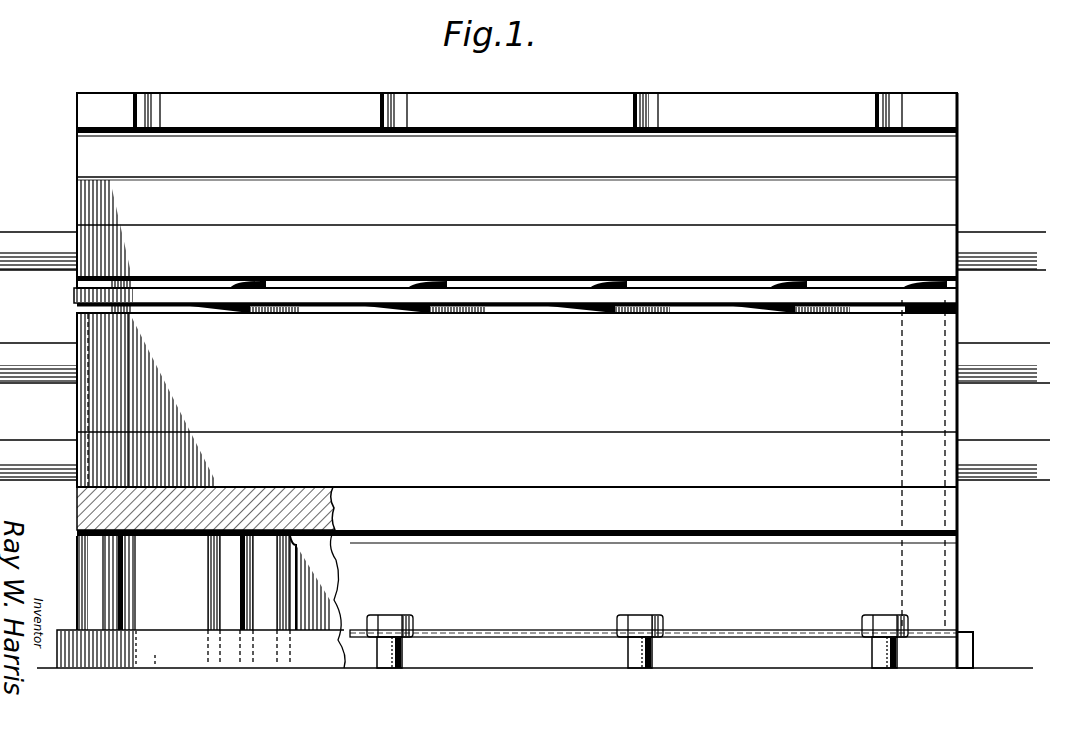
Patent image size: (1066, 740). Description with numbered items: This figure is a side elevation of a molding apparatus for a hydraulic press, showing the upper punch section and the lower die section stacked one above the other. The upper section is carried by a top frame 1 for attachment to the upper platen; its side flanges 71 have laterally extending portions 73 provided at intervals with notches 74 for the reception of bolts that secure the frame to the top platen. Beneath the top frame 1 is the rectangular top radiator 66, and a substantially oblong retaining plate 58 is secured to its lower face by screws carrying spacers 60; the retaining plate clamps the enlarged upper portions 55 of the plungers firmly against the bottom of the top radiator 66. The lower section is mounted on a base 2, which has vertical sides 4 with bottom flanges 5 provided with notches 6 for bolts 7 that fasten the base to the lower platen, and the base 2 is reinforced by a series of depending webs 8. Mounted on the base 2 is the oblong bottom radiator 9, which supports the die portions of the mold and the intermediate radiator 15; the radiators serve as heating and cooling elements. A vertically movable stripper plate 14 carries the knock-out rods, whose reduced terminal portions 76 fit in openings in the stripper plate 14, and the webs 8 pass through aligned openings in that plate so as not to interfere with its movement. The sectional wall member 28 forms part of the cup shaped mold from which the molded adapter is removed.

The top frame 1 is at (110, 198).
The base 2 is at (422, 510).
The vertical sides 4 is at (75, 560).
The bottom flanges 5 is at (518, 648).
The notches 6 is at (400, 658).
The bolts 7 is at (388, 626).
The depending webs 8 is at (204, 600).
The bottom radiator 9 is at (226, 448).
The stripper plate 14 is at (176, 660).
The intermediate radiator 15 is at (92, 400).
The wall member 28 is at (14, 240).
The enlarged upper portions 55 is at (248, 314).
The retaining plate 58 is at (75, 297).
The spacers 60 is at (128, 279).
The top radiator 66 is at (224, 263).
The side flanges 71 is at (517, 153).
The laterally extending portions 73 is at (262, 100).
The notches 74 is at (398, 106).
The reduced terminal portions 76 is at (95, 312).